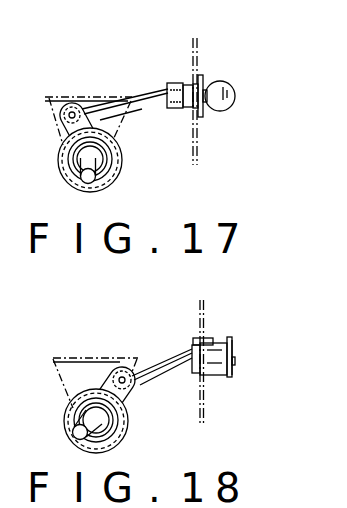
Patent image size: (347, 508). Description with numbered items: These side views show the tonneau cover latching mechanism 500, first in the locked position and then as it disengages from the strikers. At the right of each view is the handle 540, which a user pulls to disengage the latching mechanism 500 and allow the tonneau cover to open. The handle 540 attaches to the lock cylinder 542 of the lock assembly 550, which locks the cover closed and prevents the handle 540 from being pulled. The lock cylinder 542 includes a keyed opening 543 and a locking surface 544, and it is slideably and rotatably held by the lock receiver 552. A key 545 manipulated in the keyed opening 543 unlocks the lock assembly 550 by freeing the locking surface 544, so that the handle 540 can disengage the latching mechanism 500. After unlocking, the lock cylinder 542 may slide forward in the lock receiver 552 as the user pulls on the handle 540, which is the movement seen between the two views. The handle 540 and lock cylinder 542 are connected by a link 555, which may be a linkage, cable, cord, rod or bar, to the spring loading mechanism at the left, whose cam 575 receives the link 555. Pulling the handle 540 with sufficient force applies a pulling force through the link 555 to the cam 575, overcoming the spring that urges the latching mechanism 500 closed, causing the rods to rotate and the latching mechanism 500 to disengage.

In FIG. 17, the latching mechanism 500 is at (242, 58).
In FIG. 18, the latching mechanism 500 is at (264, 319).
In FIG. 17, the handle 540 is at (212, 85).
In FIG. 18, the handle 540 is at (231, 345).
In FIG. 17, the lock cylinder 542 is at (167, 104).
In FIG. 18, the lock cylinder 542 is at (218, 375).
In FIG. 18, the keyed opening 543 is at (235, 360).
In FIG. 17, the locking surface 544 is at (172, 83).
In FIG. 18, the locking surface 544 is at (210, 338).
In FIG. 17, the key 545 is at (235, 99).
In FIG. 17, the lock assembly 550 is at (185, 64).
In FIG. 18, the lock assembly 550 is at (214, 400).
In FIG. 17, the lock receiver 552 is at (181, 110).
In FIG. 18, the lock receiver 552 is at (193, 373).
In FIG. 17, the link 555 is at (147, 99).
In FIG. 18, the link 555 is at (168, 362).
In FIG. 17, the cam 575 is at (62, 134).
In FIG. 18, the cam 575 is at (103, 379).